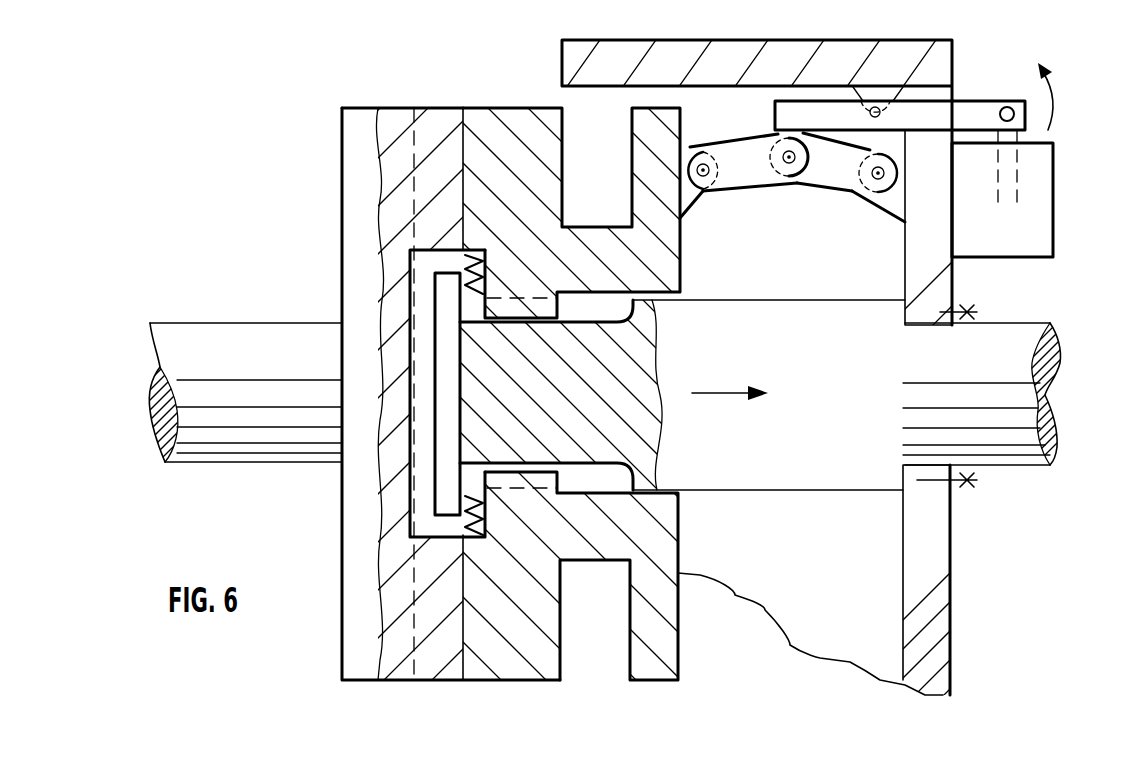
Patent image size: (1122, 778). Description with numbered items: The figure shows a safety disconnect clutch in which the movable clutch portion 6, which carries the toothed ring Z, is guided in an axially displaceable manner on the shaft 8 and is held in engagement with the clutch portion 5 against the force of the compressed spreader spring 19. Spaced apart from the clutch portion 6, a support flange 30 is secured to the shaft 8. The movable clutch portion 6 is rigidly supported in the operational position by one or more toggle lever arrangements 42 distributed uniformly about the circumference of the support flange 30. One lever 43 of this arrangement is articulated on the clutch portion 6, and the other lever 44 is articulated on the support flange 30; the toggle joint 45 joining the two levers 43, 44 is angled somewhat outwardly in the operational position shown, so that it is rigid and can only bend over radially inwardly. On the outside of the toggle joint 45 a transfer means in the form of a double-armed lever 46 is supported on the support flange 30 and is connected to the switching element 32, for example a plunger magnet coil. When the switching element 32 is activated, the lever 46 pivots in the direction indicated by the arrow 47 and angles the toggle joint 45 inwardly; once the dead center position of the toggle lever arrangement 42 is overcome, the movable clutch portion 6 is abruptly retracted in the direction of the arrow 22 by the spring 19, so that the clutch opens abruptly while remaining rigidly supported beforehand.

The toothed ring Z is at (436, 98).
The clutch portion 5 is at (352, 218).
The movable clutch portion 6 is at (487, 123).
The shaft 8 is at (1040, 432).
The spreader spring 19 is at (465, 264).
The arrow 22 is at (720, 398).
The support flange 30 is at (940, 527).
The switching element 32 is at (1033, 225).
The toggle lever arrangement 42 is at (783, 200).
The lever 43 is at (737, 173).
The lever 44 is at (850, 180).
The toggle joint 45 is at (803, 165).
The double-armed lever 46 is at (970, 117).
The pivoting direction arrow 47 is at (1055, 100).